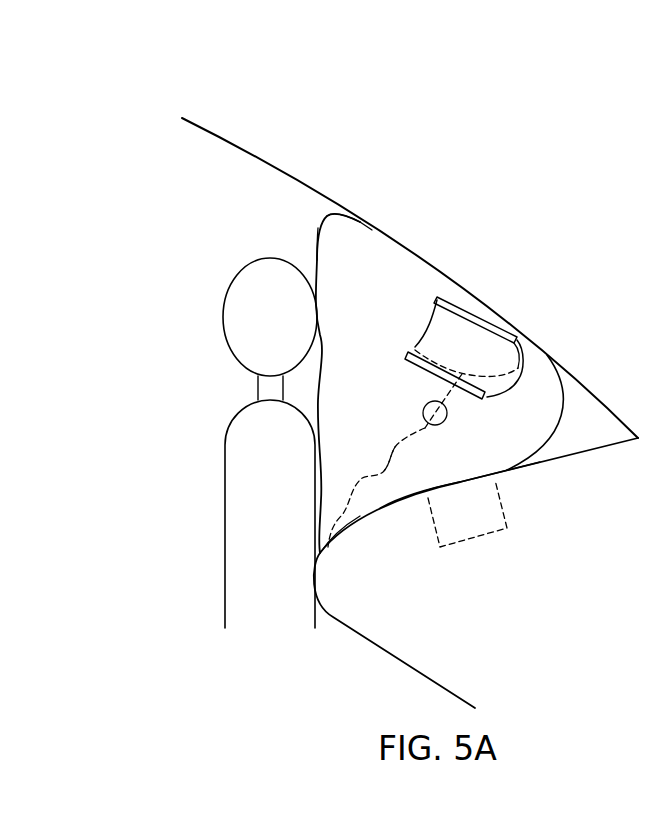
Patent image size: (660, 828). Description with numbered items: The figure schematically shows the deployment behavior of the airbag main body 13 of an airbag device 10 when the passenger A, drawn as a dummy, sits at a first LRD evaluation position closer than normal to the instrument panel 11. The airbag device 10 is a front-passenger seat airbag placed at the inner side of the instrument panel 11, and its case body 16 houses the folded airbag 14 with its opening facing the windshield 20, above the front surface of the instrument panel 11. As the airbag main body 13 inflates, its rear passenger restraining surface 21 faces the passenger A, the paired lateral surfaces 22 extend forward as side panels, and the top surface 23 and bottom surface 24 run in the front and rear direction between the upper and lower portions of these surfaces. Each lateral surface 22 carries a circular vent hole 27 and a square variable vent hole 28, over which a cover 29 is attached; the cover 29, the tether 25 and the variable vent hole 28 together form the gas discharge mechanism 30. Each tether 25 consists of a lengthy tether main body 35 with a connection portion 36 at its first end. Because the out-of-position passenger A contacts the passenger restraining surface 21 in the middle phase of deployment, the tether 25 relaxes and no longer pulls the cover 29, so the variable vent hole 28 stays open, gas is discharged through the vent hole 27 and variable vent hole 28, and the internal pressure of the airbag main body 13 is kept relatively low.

The airbag device 10 is at (505, 558).
The instrument panel 11 is at (513, 467).
The airbag main body 13 is at (560, 373).
The airbag 14 is at (322, 215).
The case body 16 is at (503, 513).
The windshield 20 is at (253, 160).
The passenger restraining surface 21 is at (317, 243).
The lateral surface 22 is at (355, 518).
The top surface 23 is at (370, 234).
The bottom surface 24 is at (402, 501).
The tether 25 is at (410, 430).
The vent hole 27 is at (447, 417).
The variable vent hole 28 is at (432, 327).
The cover 29 is at (504, 328).
The gas discharge mechanism 30 is at (440, 300).
The tether main body 35 is at (390, 460).
The connection portion 36 is at (418, 347).
The passenger A is at (225, 453).